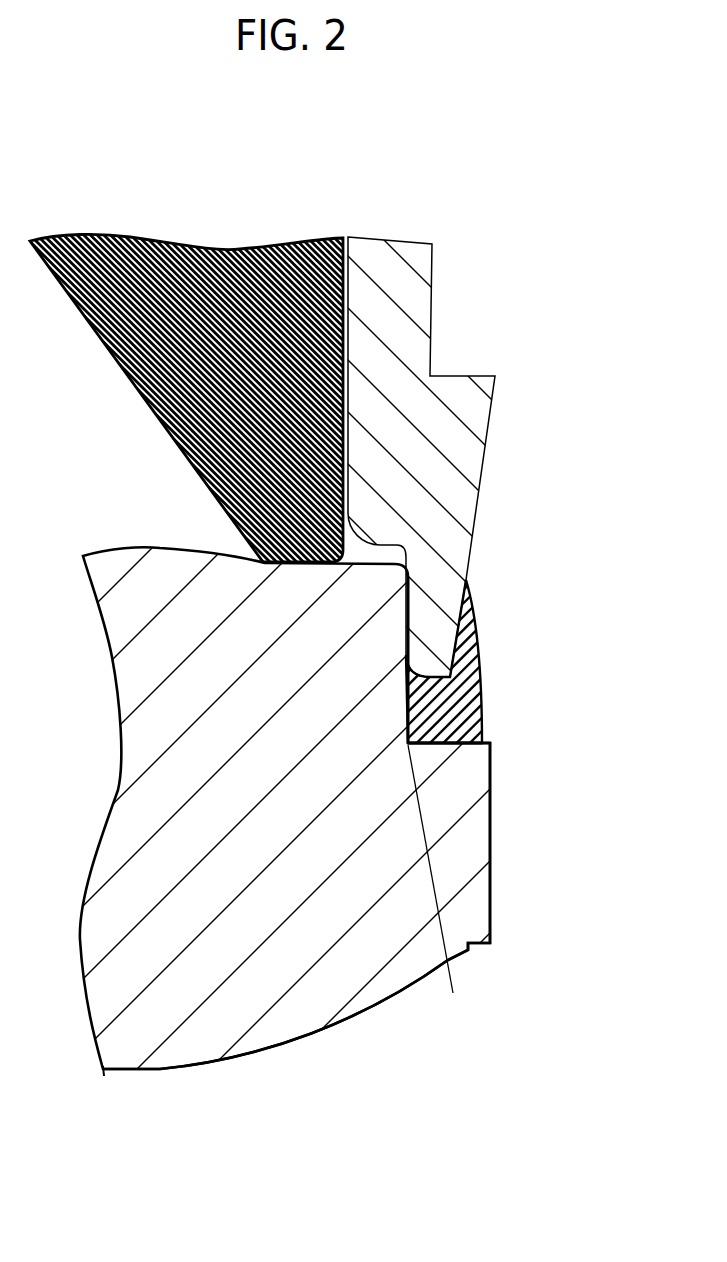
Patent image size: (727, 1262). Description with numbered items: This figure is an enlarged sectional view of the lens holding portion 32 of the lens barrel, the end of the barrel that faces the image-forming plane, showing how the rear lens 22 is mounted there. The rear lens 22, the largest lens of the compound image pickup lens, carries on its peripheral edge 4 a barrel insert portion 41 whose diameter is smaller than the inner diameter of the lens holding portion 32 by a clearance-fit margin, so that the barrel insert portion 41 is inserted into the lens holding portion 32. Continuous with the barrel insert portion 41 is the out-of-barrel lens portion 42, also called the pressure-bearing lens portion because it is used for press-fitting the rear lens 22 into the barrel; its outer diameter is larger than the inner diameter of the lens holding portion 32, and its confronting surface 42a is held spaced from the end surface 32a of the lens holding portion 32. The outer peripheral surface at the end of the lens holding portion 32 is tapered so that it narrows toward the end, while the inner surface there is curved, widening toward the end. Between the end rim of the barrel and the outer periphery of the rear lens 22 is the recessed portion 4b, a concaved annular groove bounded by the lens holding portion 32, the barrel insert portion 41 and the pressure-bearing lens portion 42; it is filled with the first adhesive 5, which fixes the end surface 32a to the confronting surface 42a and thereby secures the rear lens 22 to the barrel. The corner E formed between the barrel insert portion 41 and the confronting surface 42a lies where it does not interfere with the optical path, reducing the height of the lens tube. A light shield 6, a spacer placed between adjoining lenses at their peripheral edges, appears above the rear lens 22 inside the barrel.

The light shield 6 is at (220, 277).
The lens holding portion 32 is at (447, 497).
The end surface of lens holding portion 32a is at (453, 681).
The barrel insert portion 41 is at (408, 637).
The first adhesive 5 is at (480, 670).
The recessed portion 4b is at (440, 712).
The confronting surface 42a is at (453, 745).
The out-of-barrel lens portion 42 is at (462, 848).
The corner E is at (436, 885).
The rear lens 22 is at (180, 1012).
The peripheral edge 4 is at (355, 1038).